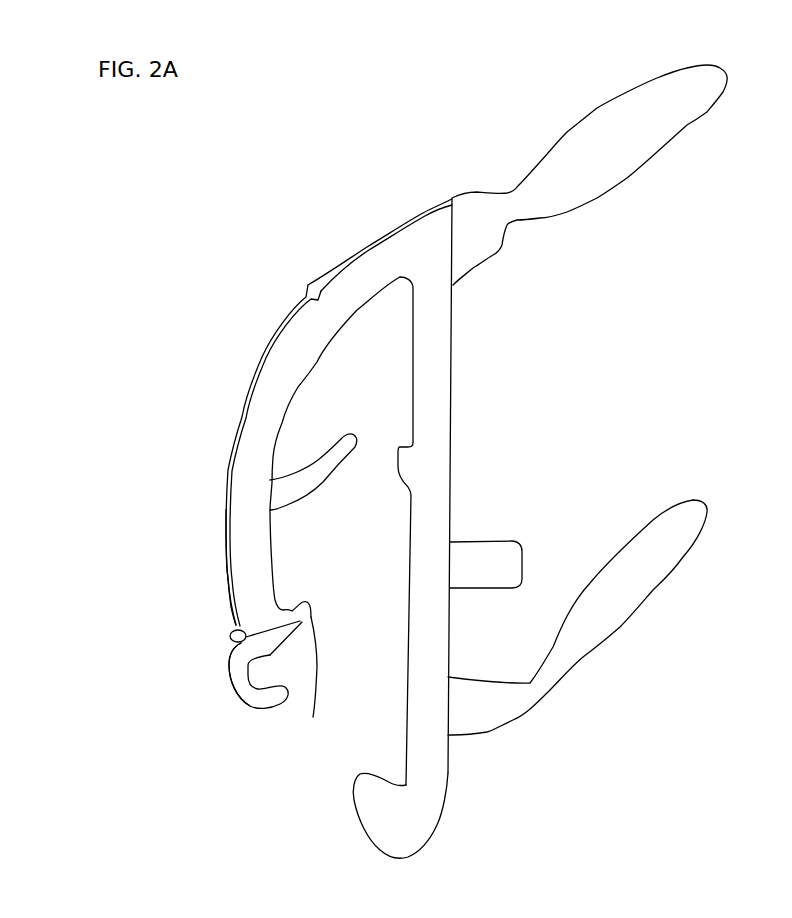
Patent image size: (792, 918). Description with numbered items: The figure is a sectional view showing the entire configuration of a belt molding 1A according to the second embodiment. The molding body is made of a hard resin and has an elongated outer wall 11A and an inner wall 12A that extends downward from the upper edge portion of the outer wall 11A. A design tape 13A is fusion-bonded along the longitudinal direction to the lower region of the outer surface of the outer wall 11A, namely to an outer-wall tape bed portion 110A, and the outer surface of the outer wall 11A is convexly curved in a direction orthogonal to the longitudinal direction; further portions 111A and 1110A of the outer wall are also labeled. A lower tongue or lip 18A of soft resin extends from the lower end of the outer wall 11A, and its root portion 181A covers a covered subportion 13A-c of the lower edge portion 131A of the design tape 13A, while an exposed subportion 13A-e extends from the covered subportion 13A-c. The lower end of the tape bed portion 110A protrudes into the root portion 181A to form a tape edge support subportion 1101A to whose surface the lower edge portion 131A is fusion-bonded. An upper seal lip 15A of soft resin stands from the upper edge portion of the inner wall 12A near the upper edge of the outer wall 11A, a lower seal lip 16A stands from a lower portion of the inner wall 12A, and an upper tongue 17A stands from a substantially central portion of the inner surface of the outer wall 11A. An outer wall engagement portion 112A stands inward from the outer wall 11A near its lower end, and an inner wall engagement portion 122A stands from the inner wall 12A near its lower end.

The belt molding 1A is at (278, 317).
The outer wall 11A is at (257, 420).
The inner wall 12A is at (440, 418).
The design tape 13A is at (268, 358).
The exposed subportion 13A-e is at (228, 550).
The covered subportion 13A-c is at (233, 656).
The upper seal lip 15A is at (685, 118).
The lower seal lip 16A is at (673, 555).
The upper tongue 17A is at (335, 467).
The lower tongue (lip) 18A is at (235, 673).
The outer-wall tape bed portion 110A is at (234, 468).
The upper portion of frame 111A is at (370, 258).
The outer wall engagement portion 112A is at (313, 717).
The inner wall engagement portion 122A is at (356, 793).
The lower edge portion 131A is at (234, 641).
The root portion 181A is at (230, 630).
The tape edge support subportion 1101A is at (257, 640).
The upper end of frame 1110A is at (425, 212).